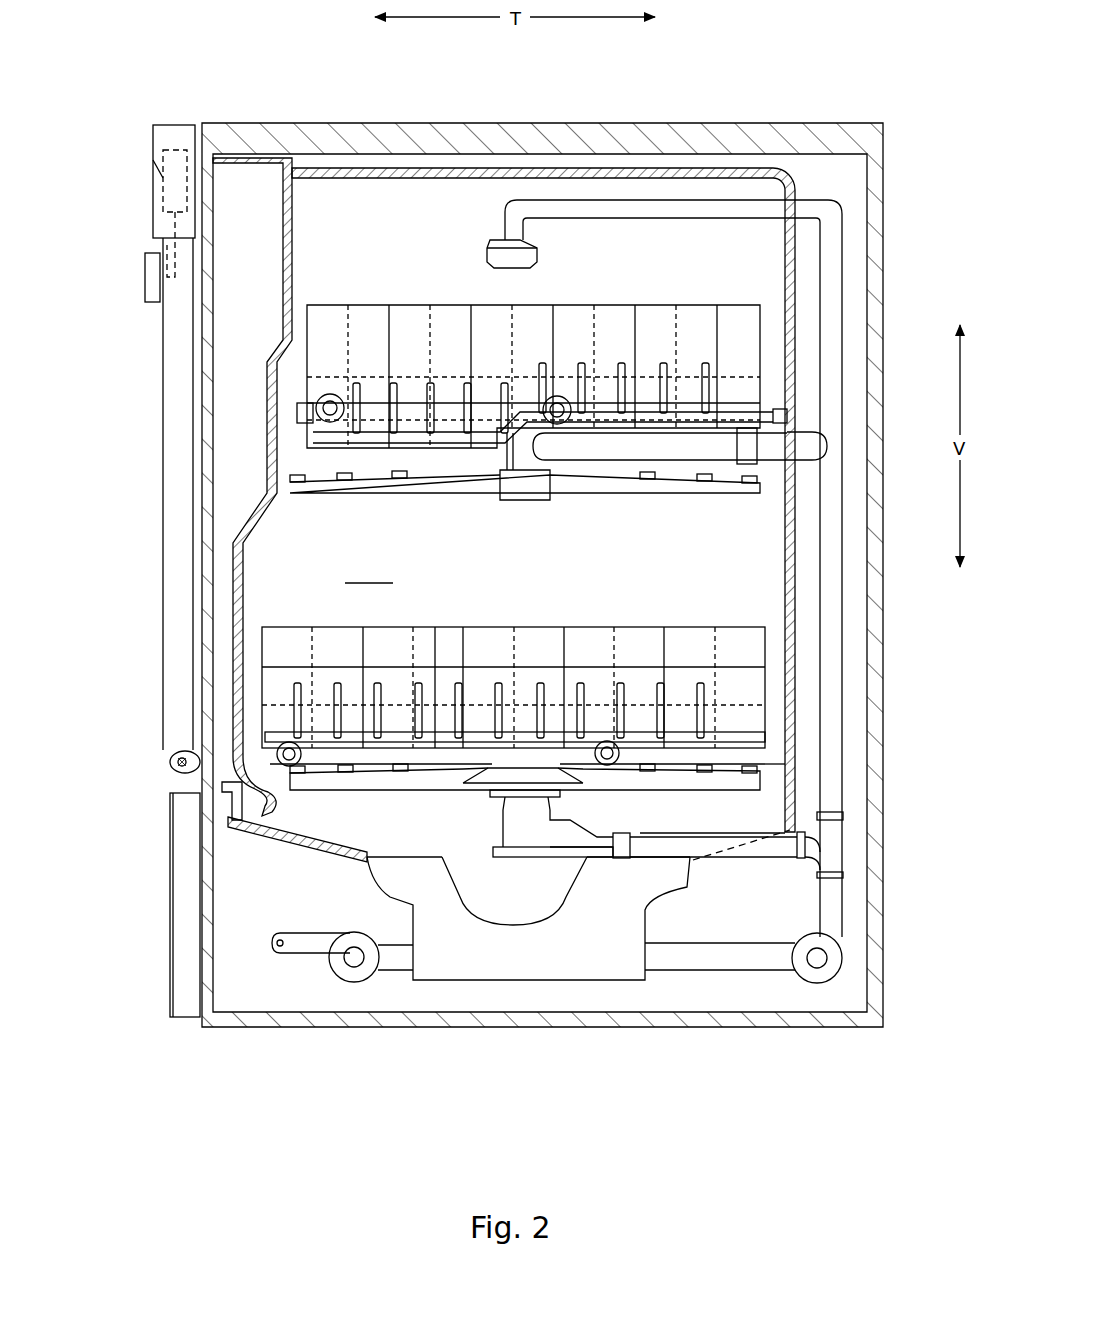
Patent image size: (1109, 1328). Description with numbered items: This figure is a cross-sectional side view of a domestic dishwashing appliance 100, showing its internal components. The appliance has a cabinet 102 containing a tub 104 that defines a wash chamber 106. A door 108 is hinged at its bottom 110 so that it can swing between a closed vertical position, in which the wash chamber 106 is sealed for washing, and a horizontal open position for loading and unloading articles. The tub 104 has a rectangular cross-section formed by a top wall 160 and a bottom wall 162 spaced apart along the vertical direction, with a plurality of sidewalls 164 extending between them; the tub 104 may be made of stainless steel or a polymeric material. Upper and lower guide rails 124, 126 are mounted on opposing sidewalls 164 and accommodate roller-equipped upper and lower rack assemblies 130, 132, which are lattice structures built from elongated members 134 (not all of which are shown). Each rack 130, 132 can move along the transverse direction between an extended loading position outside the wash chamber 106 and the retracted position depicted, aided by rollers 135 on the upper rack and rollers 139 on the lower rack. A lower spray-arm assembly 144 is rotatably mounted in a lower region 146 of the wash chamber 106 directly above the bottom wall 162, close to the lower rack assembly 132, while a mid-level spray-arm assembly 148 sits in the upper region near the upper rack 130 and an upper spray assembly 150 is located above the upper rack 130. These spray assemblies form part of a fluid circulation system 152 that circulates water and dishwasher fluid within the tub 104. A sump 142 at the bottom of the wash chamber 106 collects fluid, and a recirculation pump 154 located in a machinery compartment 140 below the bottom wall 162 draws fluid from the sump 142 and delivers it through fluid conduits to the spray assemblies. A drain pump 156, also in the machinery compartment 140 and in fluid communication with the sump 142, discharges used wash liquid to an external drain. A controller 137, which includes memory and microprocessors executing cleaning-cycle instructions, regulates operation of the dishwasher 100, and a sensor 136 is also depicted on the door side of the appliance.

The dishwashing appliance 100 is at (732, 82).
The cabinet 102 is at (872, 187).
The tub 104 is at (260, 838).
The wash chamber 106 is at (282, 567).
The door 108 is at (160, 640).
The bottom 110 is at (185, 772).
The upper guide rail 124 is at (300, 408).
The lower guide rail 126 is at (278, 773).
The upper rack assembly 130 is at (365, 290).
The lower rack assembly 132 is at (612, 625).
The elongated members 134 is at (436, 627).
The rollers 135 is at (312, 428).
The sensor 136 is at (148, 280).
The controller 137 is at (152, 158).
The rollers 139 is at (595, 740).
The machinery compartment 140 is at (248, 982).
The sump 142 is at (488, 980).
The lower spray-arm assembly 144 is at (333, 793).
The lower region 146 is at (763, 733).
The mid-level spray-arm assembly 148 is at (560, 492).
The upper spray assembly 150 is at (540, 268).
The fluid circulation system 152 is at (842, 548).
The recirculation pump 154 is at (830, 935).
The drain pump 156 is at (352, 982).
The top wall 160 is at (565, 175).
The bottom wall 162 is at (305, 850).
The sidewalls 164 is at (237, 700).